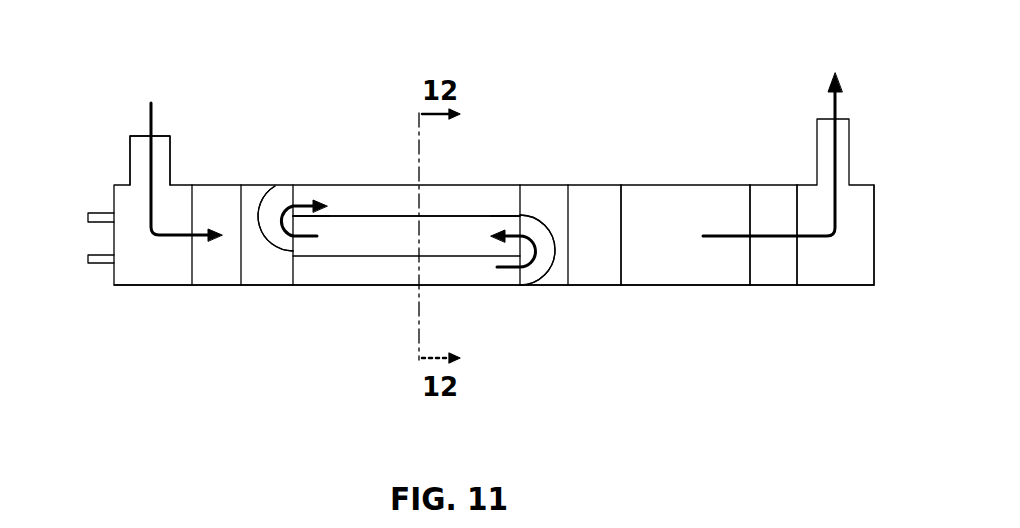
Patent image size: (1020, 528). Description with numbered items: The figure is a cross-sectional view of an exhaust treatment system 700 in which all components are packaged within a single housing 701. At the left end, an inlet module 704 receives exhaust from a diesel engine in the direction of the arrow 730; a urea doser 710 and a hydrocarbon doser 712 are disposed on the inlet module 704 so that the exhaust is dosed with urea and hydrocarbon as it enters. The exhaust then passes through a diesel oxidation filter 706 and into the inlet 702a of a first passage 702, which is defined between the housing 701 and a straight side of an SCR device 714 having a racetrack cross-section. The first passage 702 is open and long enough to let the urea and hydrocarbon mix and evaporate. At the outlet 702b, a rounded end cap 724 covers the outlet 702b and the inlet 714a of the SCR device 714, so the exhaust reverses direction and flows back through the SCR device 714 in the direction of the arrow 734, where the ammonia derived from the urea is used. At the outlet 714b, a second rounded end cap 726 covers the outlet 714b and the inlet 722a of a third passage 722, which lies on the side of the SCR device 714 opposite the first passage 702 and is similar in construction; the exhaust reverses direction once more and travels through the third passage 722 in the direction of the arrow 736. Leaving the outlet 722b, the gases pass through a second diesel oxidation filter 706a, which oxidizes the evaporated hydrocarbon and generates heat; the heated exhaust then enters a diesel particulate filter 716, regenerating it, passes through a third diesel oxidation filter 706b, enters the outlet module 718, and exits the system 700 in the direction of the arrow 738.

The exhaust treatment system 700 is at (171, 56).
The housing 701 is at (693, 192).
The first passage 702 is at (372, 275).
The inlet of the first passage 702a is at (295, 273).
The outlet of the first passage 702b is at (521, 278).
The inlet module 704 is at (128, 156).
The diesel oxidation filter 706 is at (213, 200).
The second diesel oxidation filter 706a is at (595, 203).
The third diesel oxidation filter 706b is at (767, 275).
The urea doser 710 is at (88, 217).
The hydrocarbon doser 712 is at (97, 267).
The SCR device 714 is at (477, 232).
The inlet of the SCR device 714a is at (531, 262).
The outlet of the SCR device 714b is at (289, 245).
The diesel particulate filter 716 is at (673, 268).
The outlet module 718 is at (868, 235).
The third passage 722 is at (467, 195).
The inlet of the third passage 722a is at (305, 200).
The outlet of the third passage 722b is at (537, 200).
The rounded end cap 724 is at (557, 250).
The rounded end cap 726 is at (267, 197).
The arrow 730 is at (167, 237).
The arrow 734 is at (535, 265).
The arrow 736 is at (298, 198).
The arrow 738 is at (835, 155).